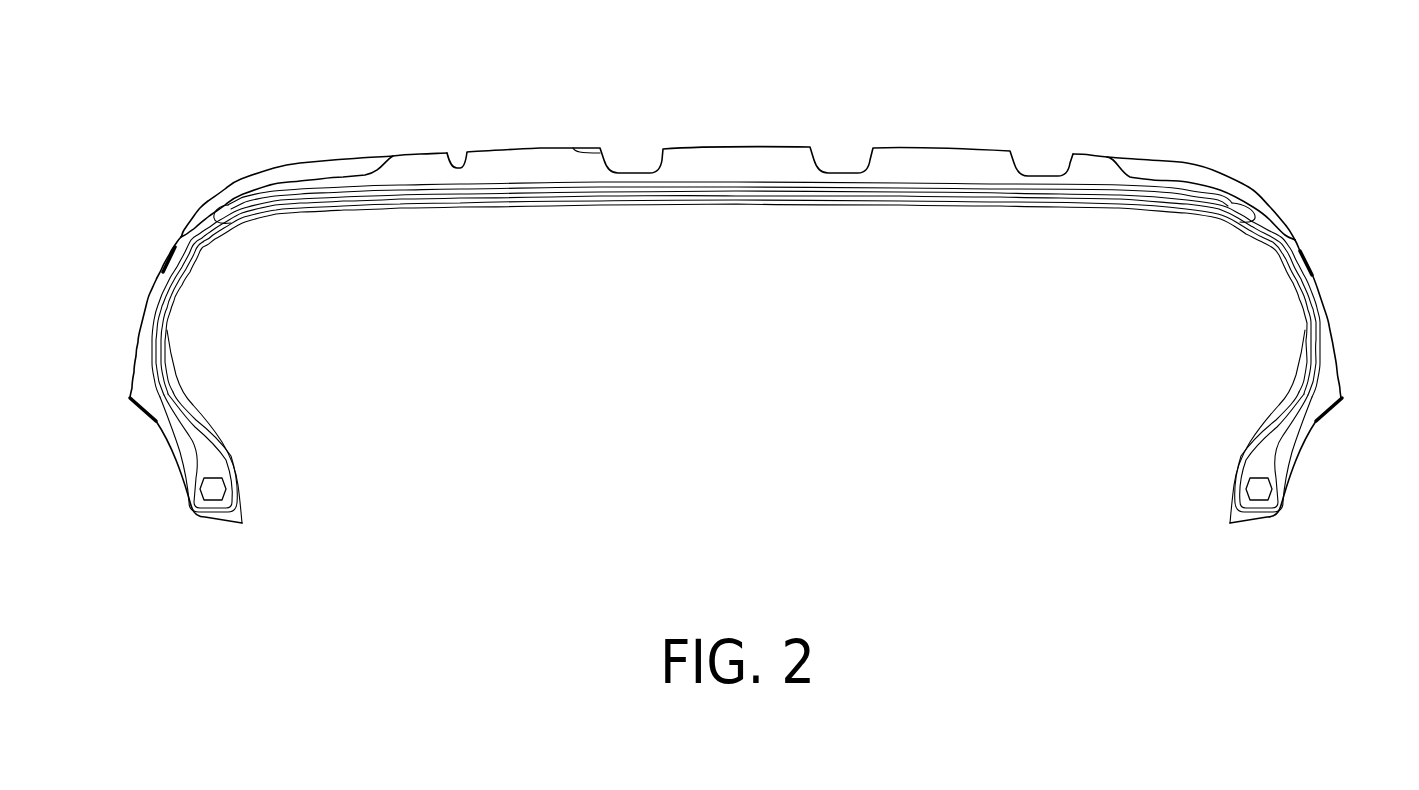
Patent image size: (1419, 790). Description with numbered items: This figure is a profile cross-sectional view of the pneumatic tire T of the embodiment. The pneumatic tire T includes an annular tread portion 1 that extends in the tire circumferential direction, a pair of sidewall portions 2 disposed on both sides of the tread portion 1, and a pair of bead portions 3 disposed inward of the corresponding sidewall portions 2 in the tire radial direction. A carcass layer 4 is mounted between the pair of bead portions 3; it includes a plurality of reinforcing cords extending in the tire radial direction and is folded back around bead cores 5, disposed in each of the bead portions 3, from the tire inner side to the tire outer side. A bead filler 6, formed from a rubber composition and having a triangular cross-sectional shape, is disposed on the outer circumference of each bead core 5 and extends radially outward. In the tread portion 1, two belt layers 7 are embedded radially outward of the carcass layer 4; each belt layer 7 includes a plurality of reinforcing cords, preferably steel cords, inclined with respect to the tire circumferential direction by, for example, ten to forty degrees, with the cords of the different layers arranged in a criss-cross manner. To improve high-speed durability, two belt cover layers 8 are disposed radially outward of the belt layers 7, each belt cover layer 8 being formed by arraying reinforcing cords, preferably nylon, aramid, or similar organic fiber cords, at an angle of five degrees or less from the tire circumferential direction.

The pneumatic tire T is at (1026, 112).
The tread portion 1 is at (930, 146).
The sidewall portion 2 is at (125, 385).
The bead portion 3 is at (197, 515).
The carcass layer 4 is at (979, 191).
The bead core 5 is at (213, 494).
The bead filler 6 is at (197, 446).
The belt layer 7 is at (714, 192).
The belt cover layer 8 is at (336, 191).